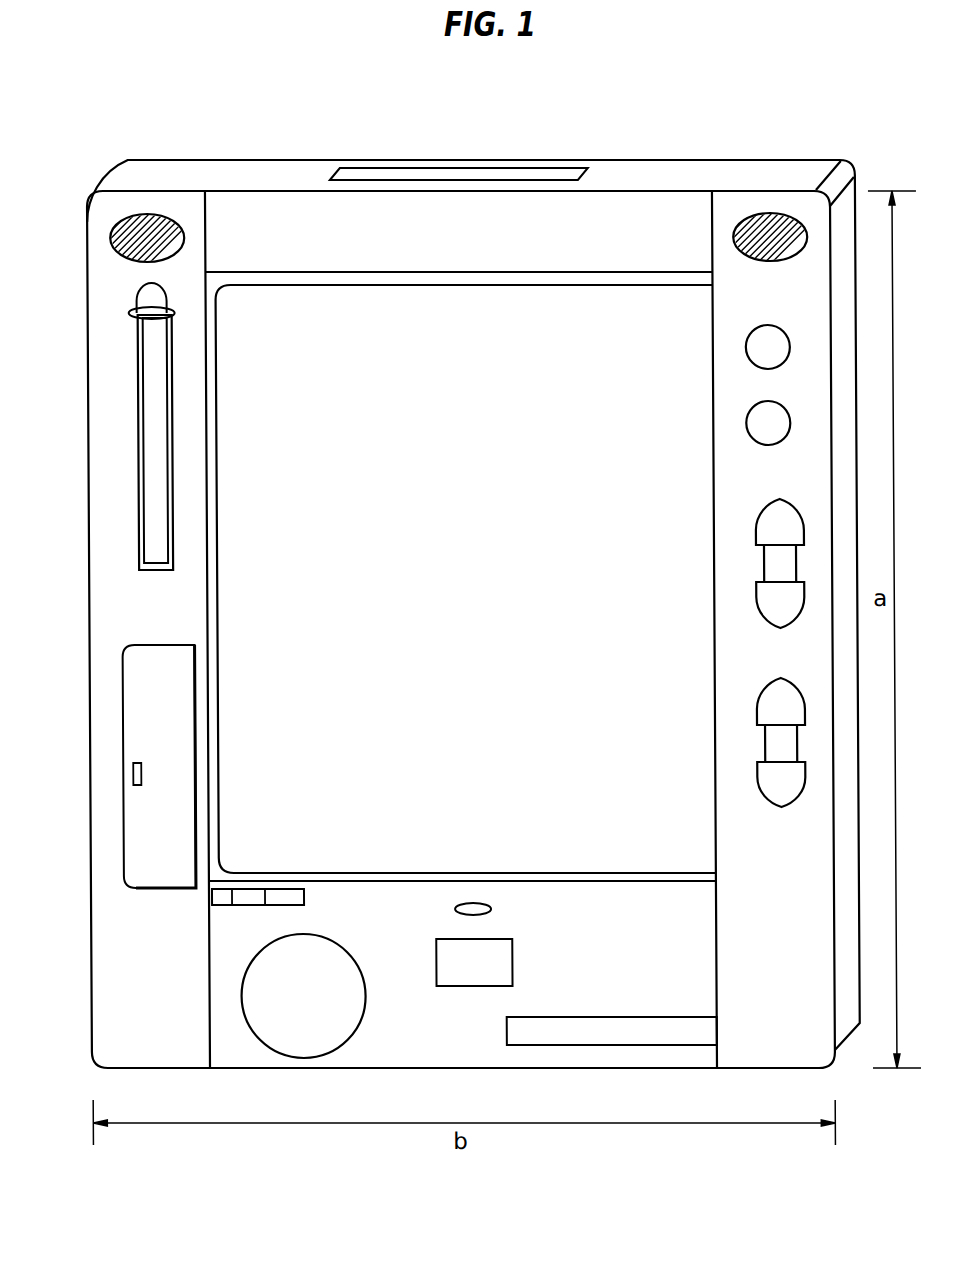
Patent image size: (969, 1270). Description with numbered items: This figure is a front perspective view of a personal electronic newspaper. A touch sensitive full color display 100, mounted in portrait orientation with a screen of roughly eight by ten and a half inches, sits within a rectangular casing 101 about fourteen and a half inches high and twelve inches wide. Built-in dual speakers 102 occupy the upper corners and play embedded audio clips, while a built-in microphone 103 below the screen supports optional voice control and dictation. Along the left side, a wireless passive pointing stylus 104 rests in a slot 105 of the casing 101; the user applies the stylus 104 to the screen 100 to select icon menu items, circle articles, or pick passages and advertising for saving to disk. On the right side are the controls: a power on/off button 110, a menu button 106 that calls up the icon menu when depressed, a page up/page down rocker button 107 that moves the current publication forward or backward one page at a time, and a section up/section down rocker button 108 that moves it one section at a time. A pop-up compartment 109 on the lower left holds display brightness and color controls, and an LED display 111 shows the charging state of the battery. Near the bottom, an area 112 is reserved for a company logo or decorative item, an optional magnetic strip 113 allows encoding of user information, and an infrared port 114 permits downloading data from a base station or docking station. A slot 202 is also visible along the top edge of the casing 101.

The display 100 is at (477, 582).
The casing 101 is at (553, 221).
The speakers 102 is at (148, 215).
The microphone 103 is at (485, 906).
The stylus 104 is at (152, 397).
The slot 105 is at (171, 510).
The menu button 106 is at (745, 422).
The page up/page down rocker button 107 is at (762, 563).
The section up/section down rocker button 108 is at (762, 742).
The pop-up compartment 109 is at (171, 745).
The power on/off button 110 is at (745, 345).
The LED display 111 is at (264, 889).
The area for company logo 112 is at (300, 1057).
The magnetic strip 113 is at (622, 1045).
The infrared port 114 is at (443, 939).
The top slot 202 is at (445, 177).